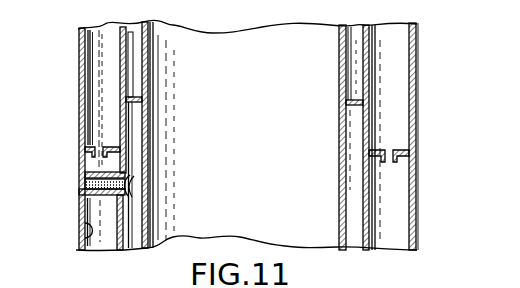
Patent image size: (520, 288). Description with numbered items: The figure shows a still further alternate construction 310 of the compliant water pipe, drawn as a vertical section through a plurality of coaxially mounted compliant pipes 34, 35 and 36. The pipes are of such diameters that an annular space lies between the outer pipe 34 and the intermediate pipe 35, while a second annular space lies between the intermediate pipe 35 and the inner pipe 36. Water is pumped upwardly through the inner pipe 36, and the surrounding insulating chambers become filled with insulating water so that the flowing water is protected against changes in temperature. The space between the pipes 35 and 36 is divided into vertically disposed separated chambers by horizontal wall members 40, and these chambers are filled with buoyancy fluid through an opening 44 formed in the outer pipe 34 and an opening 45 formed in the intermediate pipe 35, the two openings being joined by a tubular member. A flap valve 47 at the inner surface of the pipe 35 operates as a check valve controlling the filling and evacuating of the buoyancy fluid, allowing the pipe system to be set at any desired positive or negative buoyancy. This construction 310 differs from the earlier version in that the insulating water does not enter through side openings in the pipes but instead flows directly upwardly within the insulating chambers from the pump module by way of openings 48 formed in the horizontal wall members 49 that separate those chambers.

The compliant pipe 34 is at (418, 212).
The compliant pipe 35 is at (373, 99).
The compliant pipe 36 is at (344, 79).
The horizontal wall member 40 is at (358, 107).
The opening 44 is at (79, 183).
The opening 45 is at (133, 172).
The flap valve 47 is at (128, 178).
The opening 48 is at (104, 147).
The horizontal wall member 49 is at (88, 146).
The alternate construction 310 is at (419, 189).